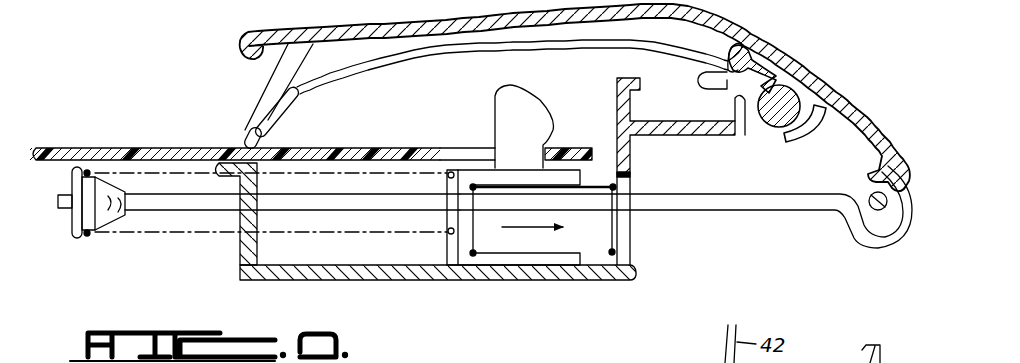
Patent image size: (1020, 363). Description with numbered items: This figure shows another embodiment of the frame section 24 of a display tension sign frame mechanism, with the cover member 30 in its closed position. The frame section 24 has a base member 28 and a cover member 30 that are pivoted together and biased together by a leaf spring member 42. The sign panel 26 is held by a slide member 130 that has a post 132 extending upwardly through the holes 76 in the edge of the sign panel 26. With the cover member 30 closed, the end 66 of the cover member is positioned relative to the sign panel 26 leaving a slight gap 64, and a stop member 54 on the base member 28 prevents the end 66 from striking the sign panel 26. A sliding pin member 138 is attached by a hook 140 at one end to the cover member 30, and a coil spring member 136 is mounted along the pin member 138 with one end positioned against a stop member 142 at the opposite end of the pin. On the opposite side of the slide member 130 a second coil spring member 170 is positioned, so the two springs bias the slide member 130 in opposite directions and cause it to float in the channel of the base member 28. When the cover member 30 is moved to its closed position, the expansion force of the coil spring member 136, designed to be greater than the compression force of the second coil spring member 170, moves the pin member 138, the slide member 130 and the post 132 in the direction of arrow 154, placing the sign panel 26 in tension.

The frame section 24 is at (827, 74).
The sign panel 26 is at (60, 155).
The base member 28 is at (607, 273).
The cover member 30 is at (715, 12).
The leaf spring member 42 is at (513, 46).
The stop member 54 is at (753, 43).
The gap 64 is at (238, 140).
The end of the cover member 66 is at (248, 133).
The holes 76 is at (457, 147).
The slide member 130 is at (460, 262).
The post 132 is at (535, 117).
The coil spring member 136 is at (167, 220).
The sliding pin member 138 is at (770, 200).
The hook 140 is at (880, 228).
The stop member 142 is at (73, 238).
The arrow 154 is at (528, 228).
The second coil spring member 170 is at (614, 253).